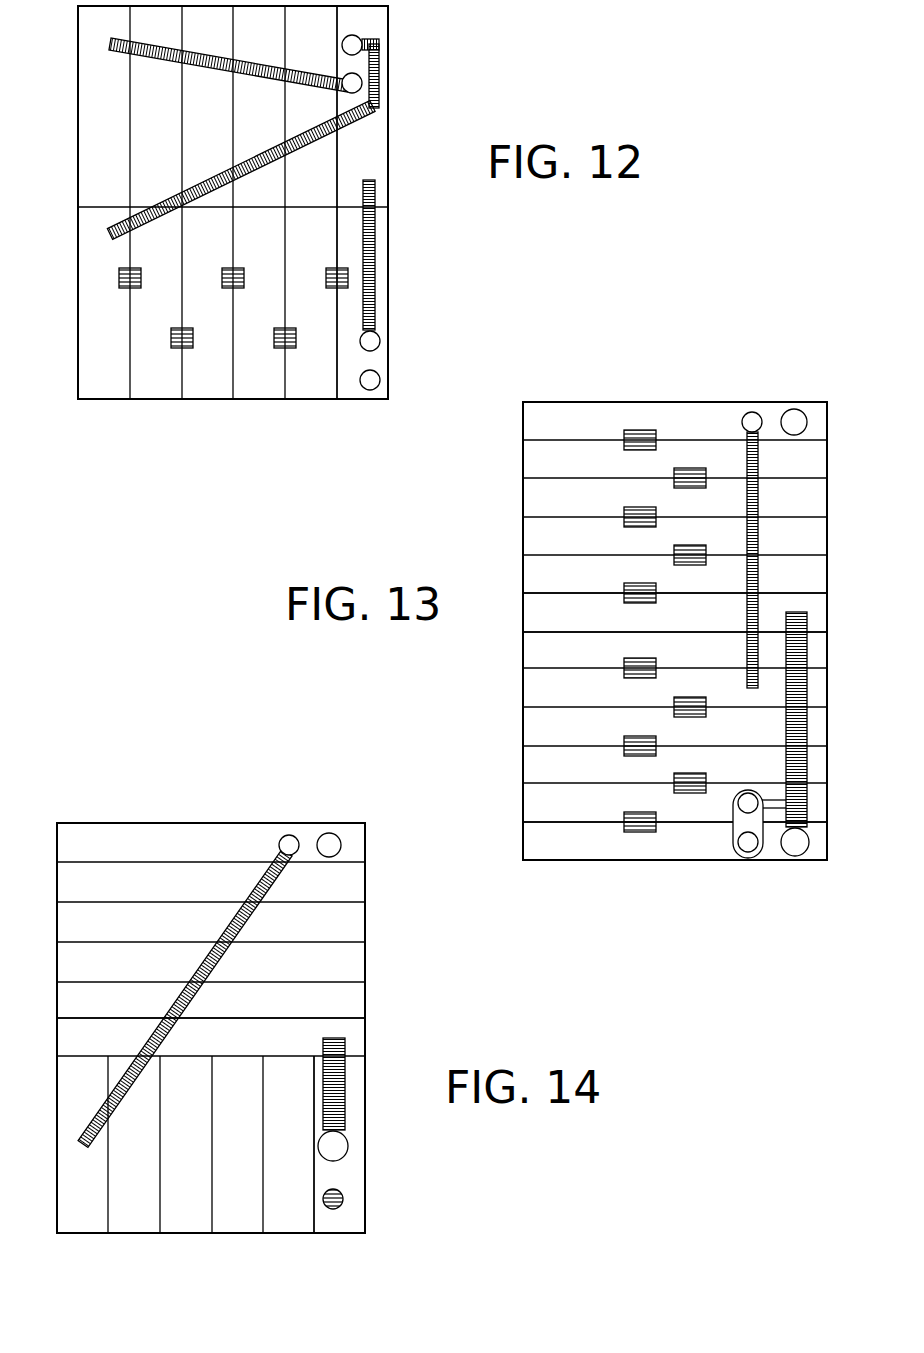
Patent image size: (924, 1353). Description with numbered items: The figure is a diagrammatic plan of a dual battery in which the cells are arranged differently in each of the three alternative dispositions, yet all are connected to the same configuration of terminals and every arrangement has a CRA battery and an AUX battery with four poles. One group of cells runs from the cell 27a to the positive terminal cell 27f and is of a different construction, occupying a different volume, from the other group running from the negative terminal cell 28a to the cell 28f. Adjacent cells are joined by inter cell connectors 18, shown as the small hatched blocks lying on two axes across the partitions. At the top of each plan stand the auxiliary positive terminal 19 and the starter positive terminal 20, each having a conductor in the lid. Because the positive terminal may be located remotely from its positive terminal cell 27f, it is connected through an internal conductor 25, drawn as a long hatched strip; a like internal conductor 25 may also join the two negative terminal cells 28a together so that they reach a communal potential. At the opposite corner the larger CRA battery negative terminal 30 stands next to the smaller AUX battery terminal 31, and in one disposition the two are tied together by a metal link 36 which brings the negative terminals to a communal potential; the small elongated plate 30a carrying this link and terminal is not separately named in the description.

In FIG. 12, the inter cell connectors 18 is at (122, 277).
In FIG. 13, the inter cell connectors 18 is at (635, 828).
In FIG. 12, the auxiliary positive terminal 19 is at (353, 45).
In FIG. 13, the auxiliary positive terminal 19 is at (752, 422).
In FIG. 14, the auxiliary positive terminal 19 is at (329, 845).
In FIG. 12, the starter positive terminal 20 is at (352, 83).
In FIG. 13, the starter positive terminal 20 is at (794, 422).
In FIG. 14, the starter positive terminal 20 is at (288, 845).
In FIG. 12, the internal conductor 25 is at (123, 47).
In FIG. 14, the internal conductor 25 is at (340, 1090).
In FIG. 12, the cell 27a is at (349, 215).
In FIG. 13, the cell 27a is at (675, 611).
In FIG. 14, the cell 27a is at (211, 1032).
In FIG. 12, the positive terminal cell 27f is at (100, 373).
In FIG. 13, the positive terminal cell 27f is at (675, 419).
In FIG. 14, the positive terminal cell 27f is at (211, 839).
In FIG. 12, the negative terminal cell 28a is at (365, 148).
In FIG. 13, the negative terminal cell 28a is at (675, 838).
In FIG. 14, the negative terminal cell 28a is at (342, 1222).
In FIG. 12, the cell 28f is at (100, 150).
In FIG. 13, the cell 28f is at (675, 648).
In FIG. 14, the cell 28f is at (88, 1208).
In FIG. 12, the CRA battery negative terminal 30 is at (372, 381).
In FIG. 13, the CRA battery negative terminal 30 is at (795, 842).
In FIG. 14, the CRA battery negative terminal 30 is at (333, 1146).
In FIG. 13, the link 30a is at (735, 800).
In FIG. 12, the AUX battery terminal 31 is at (372, 345).
In FIG. 13, the AUX battery terminal 31 is at (748, 842).
In FIG. 14, the AUX battery terminal 31 is at (335, 1200).
In FIG. 13, the metal link 36 is at (765, 855).